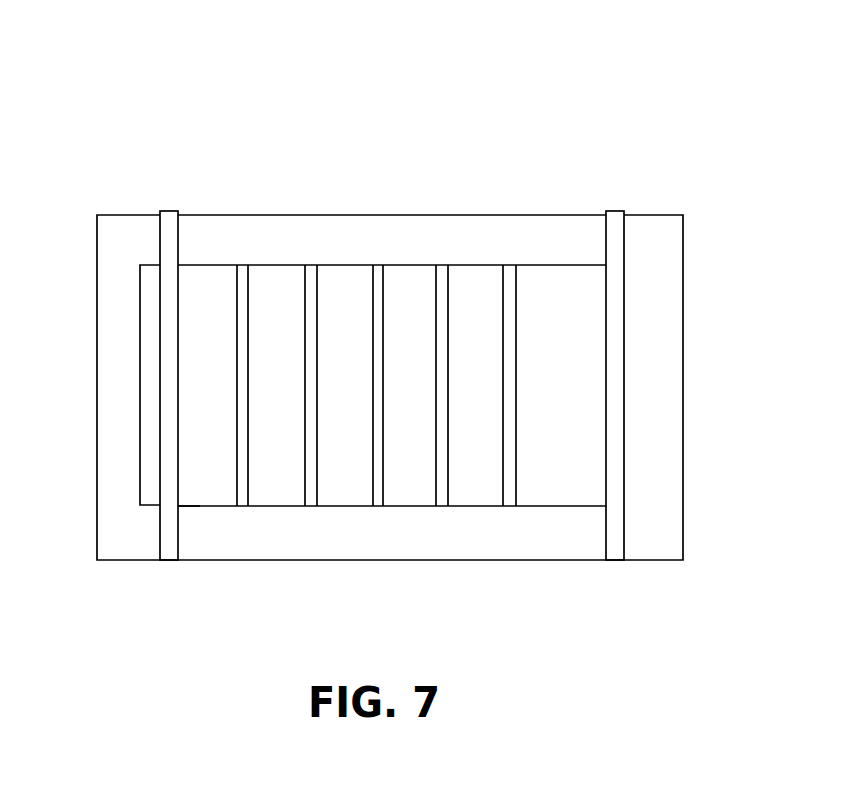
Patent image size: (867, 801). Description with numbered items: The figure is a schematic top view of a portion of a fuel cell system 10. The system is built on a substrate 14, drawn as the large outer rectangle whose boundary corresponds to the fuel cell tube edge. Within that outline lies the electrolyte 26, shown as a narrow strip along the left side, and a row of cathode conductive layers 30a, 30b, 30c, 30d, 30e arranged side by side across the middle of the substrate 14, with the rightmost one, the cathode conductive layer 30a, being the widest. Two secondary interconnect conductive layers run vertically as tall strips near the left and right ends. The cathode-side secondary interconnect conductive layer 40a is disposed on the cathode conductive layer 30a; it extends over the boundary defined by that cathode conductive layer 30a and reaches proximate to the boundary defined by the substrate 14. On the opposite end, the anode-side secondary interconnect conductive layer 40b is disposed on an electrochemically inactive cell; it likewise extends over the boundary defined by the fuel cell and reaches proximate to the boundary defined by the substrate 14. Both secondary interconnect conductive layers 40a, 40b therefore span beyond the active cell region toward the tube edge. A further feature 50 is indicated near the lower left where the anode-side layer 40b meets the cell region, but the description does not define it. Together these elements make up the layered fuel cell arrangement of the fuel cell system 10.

The fuel cell system 10 is at (370, 334).
The substrate 14 is at (358, 236).
The electrolyte 26 is at (143, 465).
The cathode conductive layer 30a is at (579, 415).
The cathode conductive layer 30b is at (494, 415).
The cathode conductive layer 30c is at (427, 415).
The cathode conductive layer 30d is at (362, 415).
The cathode conductive layer 30e is at (296, 415).
The cathode-side secondary interconnect conductive layer 40a is at (632, 240).
The anode-side secondary interconnect conductive layer 40b is at (158, 524).
The connector 50 is at (193, 510).